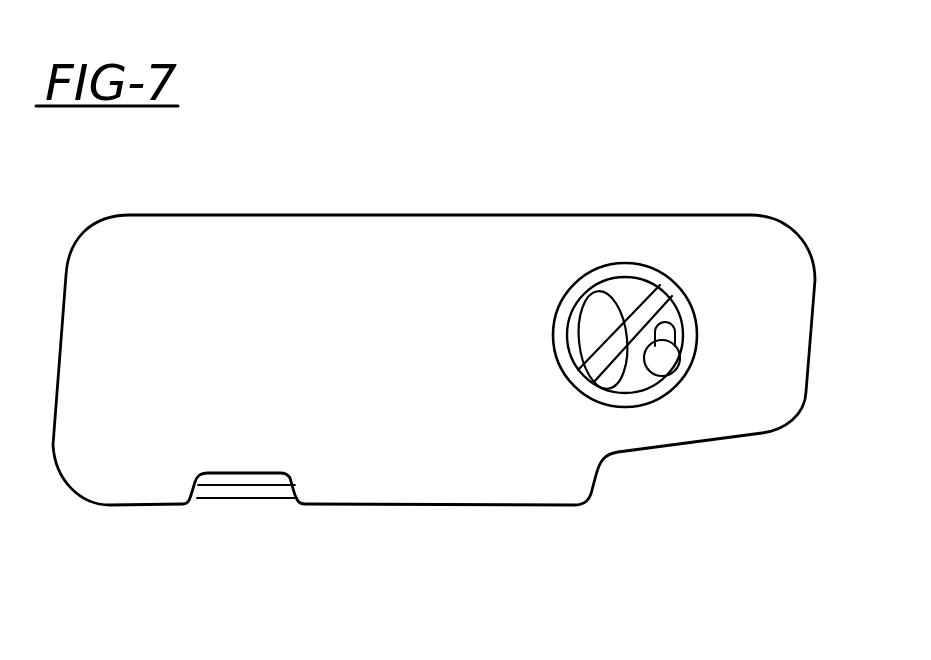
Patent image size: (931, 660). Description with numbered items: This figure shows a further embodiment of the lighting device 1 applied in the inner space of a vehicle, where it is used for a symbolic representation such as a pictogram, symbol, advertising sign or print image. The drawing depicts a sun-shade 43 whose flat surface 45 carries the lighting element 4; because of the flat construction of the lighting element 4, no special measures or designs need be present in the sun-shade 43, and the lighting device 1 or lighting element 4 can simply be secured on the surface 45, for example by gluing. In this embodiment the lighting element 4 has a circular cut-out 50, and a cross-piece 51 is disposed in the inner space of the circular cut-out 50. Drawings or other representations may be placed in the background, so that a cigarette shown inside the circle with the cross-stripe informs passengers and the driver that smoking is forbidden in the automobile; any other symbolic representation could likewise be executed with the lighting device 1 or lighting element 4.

The lighting device 1 is at (434, 318).
The lighting element 4 is at (659, 322).
The sun-shade 43 is at (434, 318).
The surface 45 is at (395, 232).
The circular cut-out 50 is at (670, 387).
The cross-piece 51 is at (650, 312).